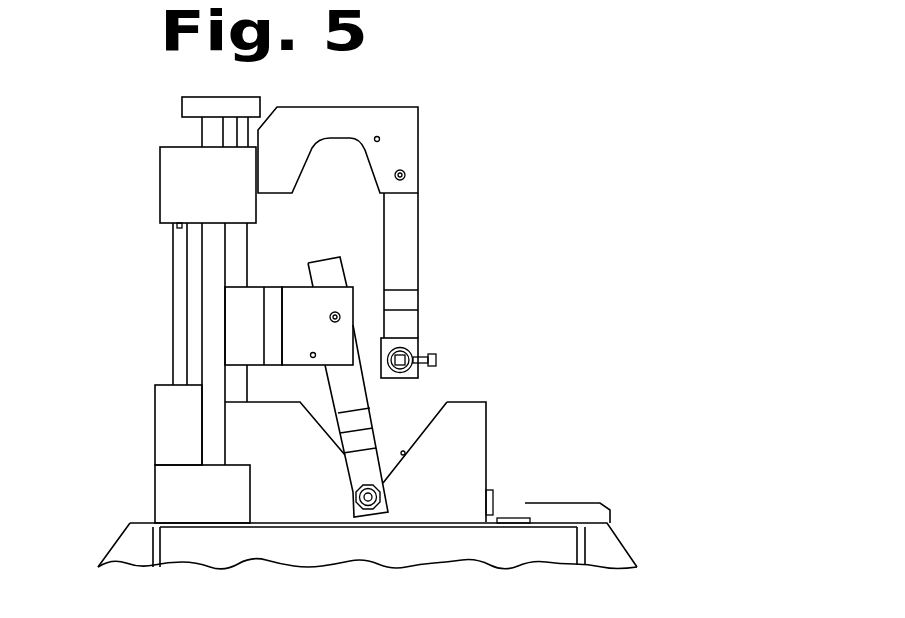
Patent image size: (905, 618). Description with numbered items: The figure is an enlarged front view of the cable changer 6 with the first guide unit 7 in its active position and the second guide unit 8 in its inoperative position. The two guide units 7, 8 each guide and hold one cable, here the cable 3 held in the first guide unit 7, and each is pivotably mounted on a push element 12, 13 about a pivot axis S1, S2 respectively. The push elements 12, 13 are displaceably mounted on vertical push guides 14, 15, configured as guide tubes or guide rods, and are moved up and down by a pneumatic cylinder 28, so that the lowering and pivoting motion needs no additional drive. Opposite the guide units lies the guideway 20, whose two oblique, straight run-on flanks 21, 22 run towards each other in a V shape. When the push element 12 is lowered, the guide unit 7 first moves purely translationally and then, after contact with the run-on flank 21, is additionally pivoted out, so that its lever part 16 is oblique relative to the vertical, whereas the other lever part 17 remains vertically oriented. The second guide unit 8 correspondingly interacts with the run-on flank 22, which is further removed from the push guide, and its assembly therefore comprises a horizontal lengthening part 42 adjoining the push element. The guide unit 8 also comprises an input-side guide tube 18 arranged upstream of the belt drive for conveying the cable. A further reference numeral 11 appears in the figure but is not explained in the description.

The cable changer 6 is at (112, 123).
The push guide 15 is at (205, 137).
The push element 13 is at (158, 197).
The push guide 14 is at (225, 257).
The push element 12 is at (247, 337).
The pivot axis S1 is at (337, 316).
The horizontal lengthening part 42 is at (337, 122).
The pivot axis S2 is at (401, 174).
The lever part 17 is at (407, 248).
The guide unit 8 is at (412, 342).
The lever part 16 is at (356, 402).
The guide tube 18 is at (368, 500).
The guide unit 7 is at (353, 500).
The run-on flank 21 is at (318, 417).
The pneumatic cylinder 28 is at (173, 452).
The guideway 20 is at (272, 493).
The run-on flank 22 is at (412, 442).
The cable 3 is at (383, 487).
The base plate 11 is at (465, 550).